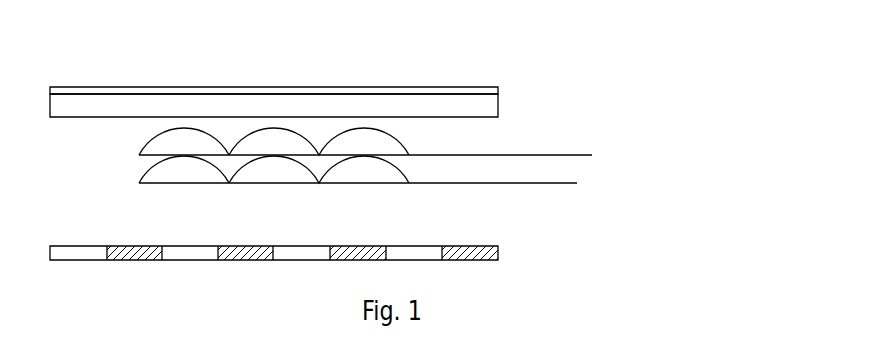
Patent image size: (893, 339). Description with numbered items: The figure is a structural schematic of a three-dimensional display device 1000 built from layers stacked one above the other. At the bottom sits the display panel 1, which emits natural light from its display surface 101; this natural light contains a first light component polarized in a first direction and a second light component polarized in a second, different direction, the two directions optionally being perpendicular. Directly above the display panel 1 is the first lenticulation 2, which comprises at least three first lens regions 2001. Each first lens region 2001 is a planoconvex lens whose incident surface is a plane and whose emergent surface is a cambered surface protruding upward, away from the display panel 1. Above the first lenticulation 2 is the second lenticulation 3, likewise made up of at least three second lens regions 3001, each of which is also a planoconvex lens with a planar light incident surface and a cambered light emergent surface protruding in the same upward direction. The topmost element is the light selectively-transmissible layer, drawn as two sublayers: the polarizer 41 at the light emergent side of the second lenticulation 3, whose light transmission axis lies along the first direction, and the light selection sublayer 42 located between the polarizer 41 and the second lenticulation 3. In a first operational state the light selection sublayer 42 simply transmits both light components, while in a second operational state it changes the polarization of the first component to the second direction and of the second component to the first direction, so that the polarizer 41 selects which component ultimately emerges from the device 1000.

The three-dimensional display device 1000 is at (387, 142).
The display panel 1 is at (331, 216).
The display surface 101 is at (108, 245).
The first lenticulation 2 is at (372, 197).
The first lens region 2001 is at (197, 185).
The second lenticulation 3 is at (377, 101).
The second lens region 3001 is at (184, 120).
The polarizer 41 is at (498, 86).
The light selection sublayer 42 is at (498, 108).